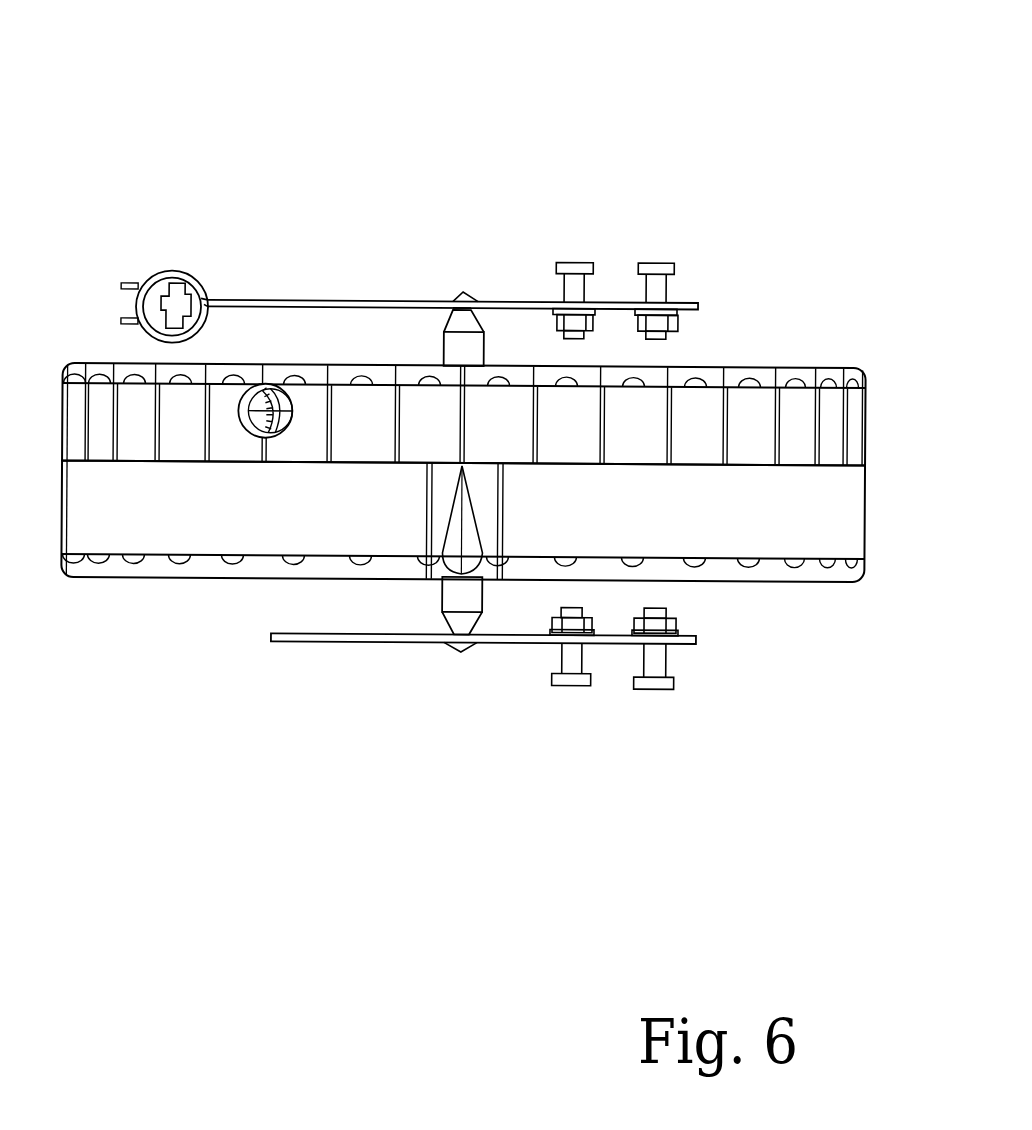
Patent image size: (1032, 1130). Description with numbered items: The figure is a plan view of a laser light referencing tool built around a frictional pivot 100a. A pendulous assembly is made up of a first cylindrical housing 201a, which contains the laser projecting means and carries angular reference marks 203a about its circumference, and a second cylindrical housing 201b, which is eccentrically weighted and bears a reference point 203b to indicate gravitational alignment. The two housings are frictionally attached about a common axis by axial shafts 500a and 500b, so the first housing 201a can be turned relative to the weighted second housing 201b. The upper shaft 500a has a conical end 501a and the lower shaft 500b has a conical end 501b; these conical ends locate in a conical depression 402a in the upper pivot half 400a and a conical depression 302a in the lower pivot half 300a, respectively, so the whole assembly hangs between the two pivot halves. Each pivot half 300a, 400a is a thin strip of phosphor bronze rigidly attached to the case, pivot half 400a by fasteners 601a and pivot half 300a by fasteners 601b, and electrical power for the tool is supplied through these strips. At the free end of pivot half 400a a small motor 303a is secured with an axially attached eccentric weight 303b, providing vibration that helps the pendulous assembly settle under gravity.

The frictional pivot 100a is at (458, 434).
The first cylindrical housing 201a is at (464, 322).
The second cylindrical housing 201b is at (463, 646).
The angular reference marks 203a is at (393, 392).
The reference point 203b is at (306, 626).
The pivot half 300a is at (404, 682).
The conical depression 302a is at (418, 715).
The motor 303a is at (130, 269).
The eccentric weight 303b is at (217, 276).
The pivot half 400a is at (443, 240).
The conical depression 402a is at (505, 260).
The axial shaft 500a is at (356, 249).
The axial shaft 500b is at (327, 700).
The conical end 501a is at (376, 211).
The conical end 501b is at (339, 738).
The fasteners 601a is at (655, 263).
The fasteners 601b is at (657, 688).